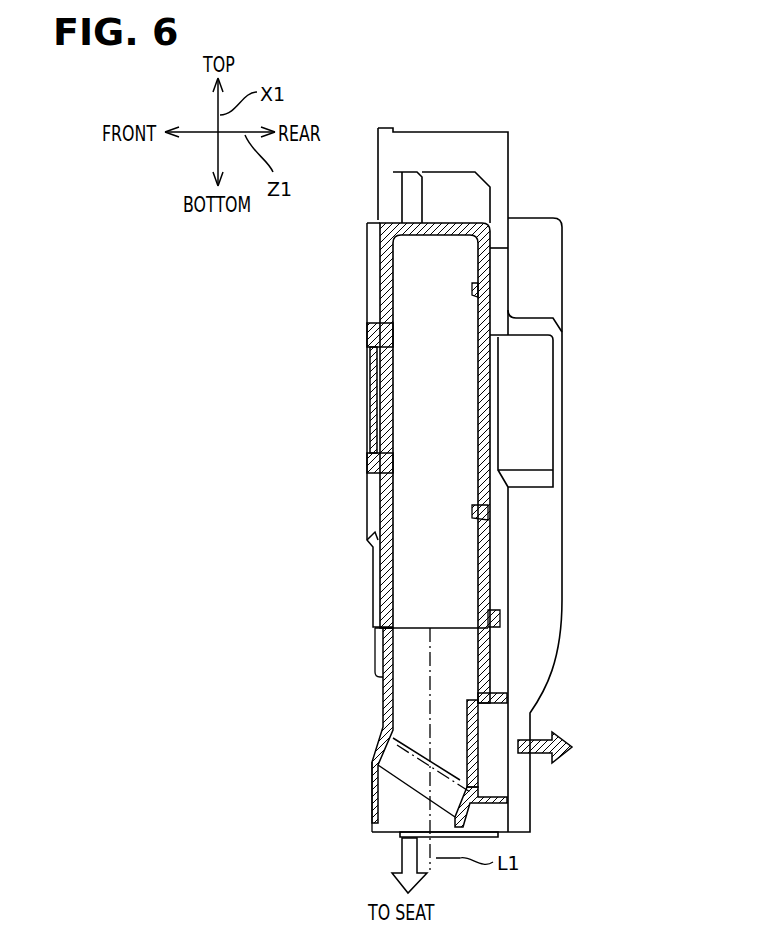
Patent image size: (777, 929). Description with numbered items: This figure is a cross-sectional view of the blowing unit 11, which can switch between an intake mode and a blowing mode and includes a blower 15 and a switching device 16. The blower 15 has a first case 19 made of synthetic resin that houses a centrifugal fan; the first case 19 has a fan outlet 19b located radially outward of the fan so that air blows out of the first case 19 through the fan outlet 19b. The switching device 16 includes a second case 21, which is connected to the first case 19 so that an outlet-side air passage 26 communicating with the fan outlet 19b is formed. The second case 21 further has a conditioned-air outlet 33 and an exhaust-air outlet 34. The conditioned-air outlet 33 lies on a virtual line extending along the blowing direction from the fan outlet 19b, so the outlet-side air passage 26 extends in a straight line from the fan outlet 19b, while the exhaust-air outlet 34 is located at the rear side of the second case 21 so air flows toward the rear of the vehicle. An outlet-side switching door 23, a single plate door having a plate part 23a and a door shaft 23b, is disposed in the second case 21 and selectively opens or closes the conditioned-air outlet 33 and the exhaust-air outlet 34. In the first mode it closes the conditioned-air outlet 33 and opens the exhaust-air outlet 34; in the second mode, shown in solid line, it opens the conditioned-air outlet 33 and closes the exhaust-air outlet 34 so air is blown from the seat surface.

The blowing unit 11 is at (592, 258).
The blower 15 is at (380, 302).
The first case 19 is at (387, 505).
The fan outlet 19b is at (450, 632).
The outlet-side air passage 26 is at (408, 645).
The second case 21 is at (383, 685).
The switching device 16 is at (382, 712).
The conditioned-air outlet 33 is at (393, 777).
The outlet-side switching door 23 is at (574, 757).
The plate part 23a is at (480, 713).
The door shaft 23b is at (478, 787).
The exhaust-air outlet 34 is at (507, 777).